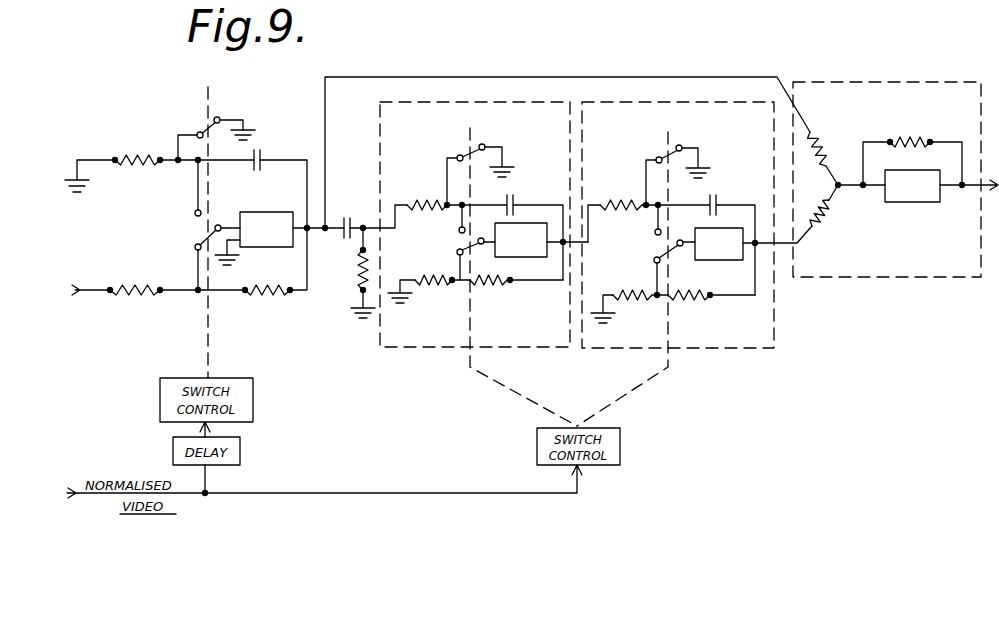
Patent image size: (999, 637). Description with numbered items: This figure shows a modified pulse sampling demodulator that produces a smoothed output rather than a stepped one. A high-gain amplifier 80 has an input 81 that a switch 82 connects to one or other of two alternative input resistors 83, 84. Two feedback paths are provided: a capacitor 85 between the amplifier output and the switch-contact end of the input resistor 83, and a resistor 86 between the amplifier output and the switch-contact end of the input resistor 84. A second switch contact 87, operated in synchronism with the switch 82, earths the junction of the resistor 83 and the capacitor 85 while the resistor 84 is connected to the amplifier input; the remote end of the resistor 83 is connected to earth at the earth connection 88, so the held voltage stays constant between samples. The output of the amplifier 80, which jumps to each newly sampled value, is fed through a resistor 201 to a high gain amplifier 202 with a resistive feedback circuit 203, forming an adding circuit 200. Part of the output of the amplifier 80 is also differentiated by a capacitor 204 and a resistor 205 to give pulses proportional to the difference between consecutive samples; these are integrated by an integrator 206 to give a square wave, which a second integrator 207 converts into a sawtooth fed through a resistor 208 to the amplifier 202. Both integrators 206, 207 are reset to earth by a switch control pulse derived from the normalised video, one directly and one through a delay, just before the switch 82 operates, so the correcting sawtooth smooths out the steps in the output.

The amplifier 80 is at (273, 212).
The input 81 is at (232, 222).
The switch 82 is at (195, 235).
The input resistor 83 is at (138, 153).
The input resistor 84 is at (137, 285).
The capacitor 85 is at (260, 150).
The resistor 86 is at (258, 287).
The second switch contact 87 is at (200, 127).
The earth connection 88 is at (82, 195).
The adding circuit 200 is at (895, 165).
The resistor 201 is at (822, 137).
The high gain amplifier 202 is at (917, 202).
The resistive feedback circuit 203 is at (915, 137).
The capacitor 204 is at (347, 218).
The resistor 205 is at (357, 265).
The integrator 206 is at (380, 118).
The second integrator 207 is at (580, 127).
The resistor 208 is at (827, 210).